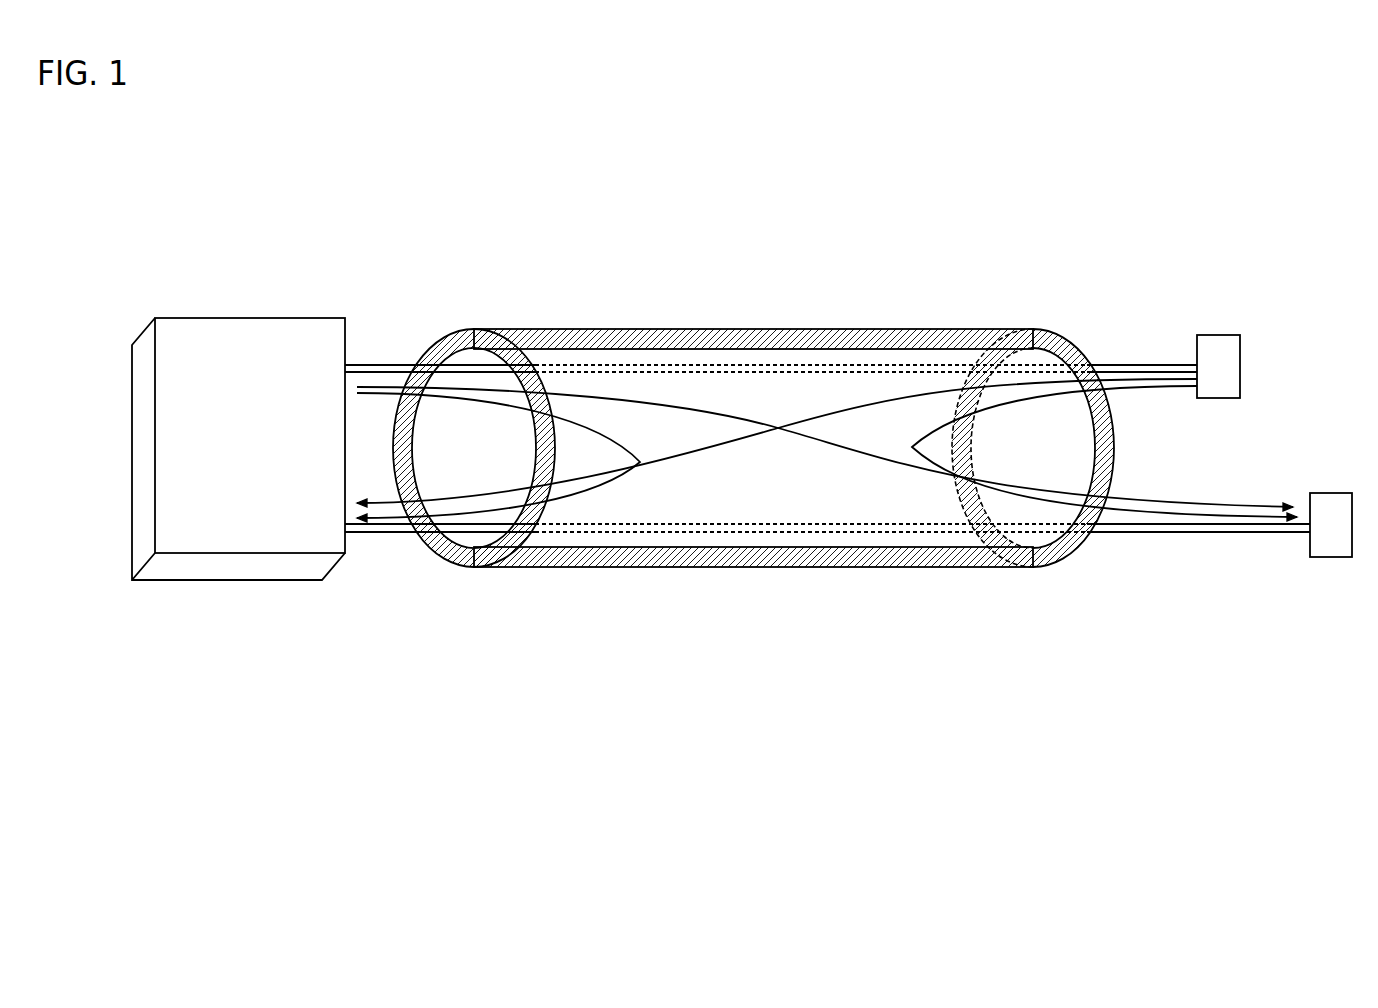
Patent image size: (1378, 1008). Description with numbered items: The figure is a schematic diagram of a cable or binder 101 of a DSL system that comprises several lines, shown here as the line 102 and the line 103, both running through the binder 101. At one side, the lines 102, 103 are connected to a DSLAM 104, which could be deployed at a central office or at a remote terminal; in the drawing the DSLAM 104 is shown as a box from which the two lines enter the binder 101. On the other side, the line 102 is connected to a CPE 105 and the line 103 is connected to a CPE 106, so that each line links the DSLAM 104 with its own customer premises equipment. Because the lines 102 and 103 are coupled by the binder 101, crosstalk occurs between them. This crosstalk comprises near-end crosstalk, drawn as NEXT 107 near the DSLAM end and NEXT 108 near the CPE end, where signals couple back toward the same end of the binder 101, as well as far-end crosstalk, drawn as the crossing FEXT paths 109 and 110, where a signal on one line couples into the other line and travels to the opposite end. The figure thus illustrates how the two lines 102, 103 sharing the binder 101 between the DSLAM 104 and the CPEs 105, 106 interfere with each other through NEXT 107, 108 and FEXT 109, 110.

The cable or binder 101 is at (770, 330).
The line 102 is at (923, 366).
The line 103 is at (757, 533).
The DSLAM 104 is at (223, 317).
The CPE 105 is at (1218, 335).
The CPE 106 is at (1332, 557).
The near-end crosstalk 107 is at (375, 520).
The near-end crosstalk 108 is at (1160, 507).
The far-end crosstalk 109 is at (663, 463).
The far-end crosstalk 110 is at (892, 460).